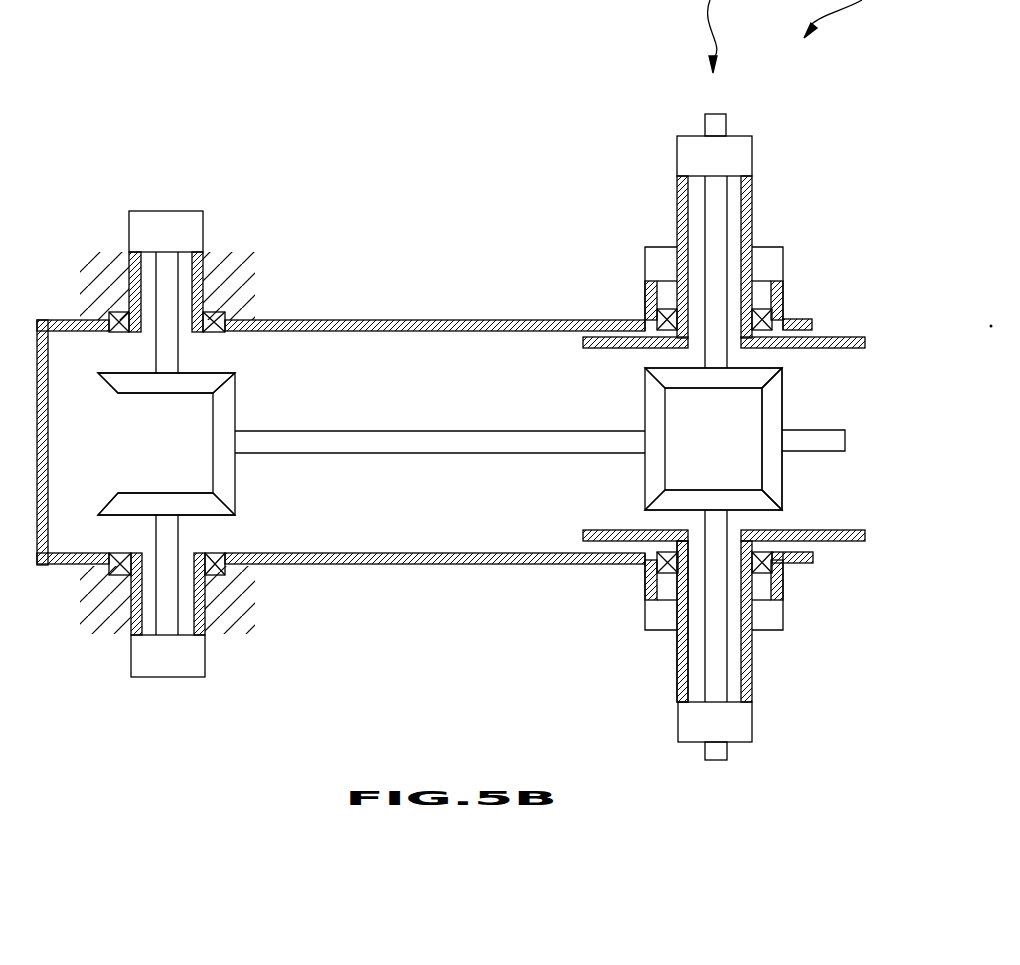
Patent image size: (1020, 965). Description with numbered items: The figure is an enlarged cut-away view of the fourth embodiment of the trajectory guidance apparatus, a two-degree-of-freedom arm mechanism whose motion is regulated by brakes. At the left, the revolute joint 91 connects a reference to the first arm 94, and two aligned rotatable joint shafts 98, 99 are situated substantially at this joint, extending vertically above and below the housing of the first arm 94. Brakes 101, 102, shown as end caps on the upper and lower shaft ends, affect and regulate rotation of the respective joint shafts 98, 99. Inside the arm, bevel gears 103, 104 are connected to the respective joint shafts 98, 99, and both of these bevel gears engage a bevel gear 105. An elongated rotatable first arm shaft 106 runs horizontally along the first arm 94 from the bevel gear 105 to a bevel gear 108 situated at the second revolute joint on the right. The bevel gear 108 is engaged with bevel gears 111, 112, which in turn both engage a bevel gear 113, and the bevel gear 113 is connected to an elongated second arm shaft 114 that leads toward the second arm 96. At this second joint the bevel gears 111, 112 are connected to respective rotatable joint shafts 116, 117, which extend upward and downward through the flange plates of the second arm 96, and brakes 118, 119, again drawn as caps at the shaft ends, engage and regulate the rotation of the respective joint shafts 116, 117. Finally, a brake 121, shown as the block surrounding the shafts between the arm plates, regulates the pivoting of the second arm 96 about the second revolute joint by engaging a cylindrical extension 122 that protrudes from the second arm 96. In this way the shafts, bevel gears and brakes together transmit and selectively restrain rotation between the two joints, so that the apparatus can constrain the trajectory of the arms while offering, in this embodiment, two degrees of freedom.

The revolute joint 91 is at (159, 172).
The first arm 94 is at (432, 320).
The second arm 96 is at (843, 337).
The joint shaft 98 is at (165, 278).
The joint shaft 99 is at (167, 587).
The brake 101 is at (219, 218).
The brake 102 is at (163, 678).
The bevel gear 103 is at (173, 383).
The bevel gear 104 is at (168, 503).
The bevel gear 105 is at (236, 445).
The first arm shaft 106 is at (398, 440).
The bevel gear 108 is at (701, 440).
The bevel gear 111 is at (743, 377).
The bevel gear 112 is at (737, 502).
The bevel gear 113 is at (773, 450).
The second arm shaft 114 is at (807, 430).
The joint shaft 116 is at (713, 228).
The joint shaft 117 is at (715, 655).
The brake 118 is at (747, 135).
The brake 119 is at (753, 713).
The brake 121 is at (783, 602).
The cylindrical extension 122 is at (677, 668).